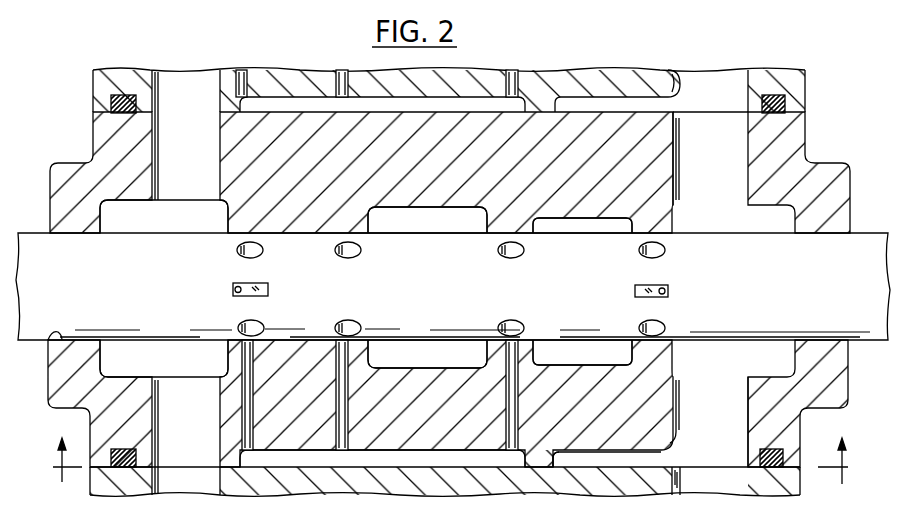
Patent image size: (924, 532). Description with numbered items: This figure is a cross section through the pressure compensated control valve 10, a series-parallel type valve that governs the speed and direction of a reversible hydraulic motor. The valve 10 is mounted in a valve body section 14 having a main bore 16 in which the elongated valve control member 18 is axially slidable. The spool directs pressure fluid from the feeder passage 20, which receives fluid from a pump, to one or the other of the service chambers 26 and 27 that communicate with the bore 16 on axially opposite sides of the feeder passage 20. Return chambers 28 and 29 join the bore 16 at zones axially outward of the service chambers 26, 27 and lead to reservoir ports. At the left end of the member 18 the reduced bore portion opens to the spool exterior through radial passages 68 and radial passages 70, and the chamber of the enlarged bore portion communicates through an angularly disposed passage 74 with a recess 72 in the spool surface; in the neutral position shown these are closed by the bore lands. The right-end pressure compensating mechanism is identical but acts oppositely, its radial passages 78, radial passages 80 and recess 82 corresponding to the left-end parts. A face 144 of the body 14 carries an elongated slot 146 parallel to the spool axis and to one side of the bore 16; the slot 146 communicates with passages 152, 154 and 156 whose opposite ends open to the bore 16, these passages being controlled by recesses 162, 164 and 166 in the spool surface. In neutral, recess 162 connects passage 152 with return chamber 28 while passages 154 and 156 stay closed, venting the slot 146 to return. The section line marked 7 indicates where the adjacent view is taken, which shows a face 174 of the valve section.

The pressure compensated control valve 10 is at (843, 155).
The valve body section 14 is at (798, 138).
The main bore 16 is at (52, 334).
The valve control member 18 is at (797, 321).
The feeder passage 20 is at (422, 218).
The service chamber 26 is at (297, 212).
The service chamber 27 is at (578, 223).
The return chamber 28 is at (182, 125).
The return chamber 29 is at (702, 125).
The radial passages 68 is at (361, 251).
The radial passages 70 is at (264, 251).
The recess 72 is at (268, 290).
The angularly disposed passage 74 is at (232, 289).
The radial passages 78 is at (524, 251).
The radial passages 80 is at (665, 251).
The recess 82 is at (645, 291).
The face 144 is at (527, 470).
The elongated slot 146 is at (447, 102).
The passage 152 is at (247, 78).
The passage 154 is at (340, 74).
The passage 156 is at (517, 78).
The recess 162 is at (231, 338).
The recess 164 is at (312, 339).
The recess 166 is at (556, 343).
The face 174 is at (545, 107).
The section line 7- 7 is at (448, 461).